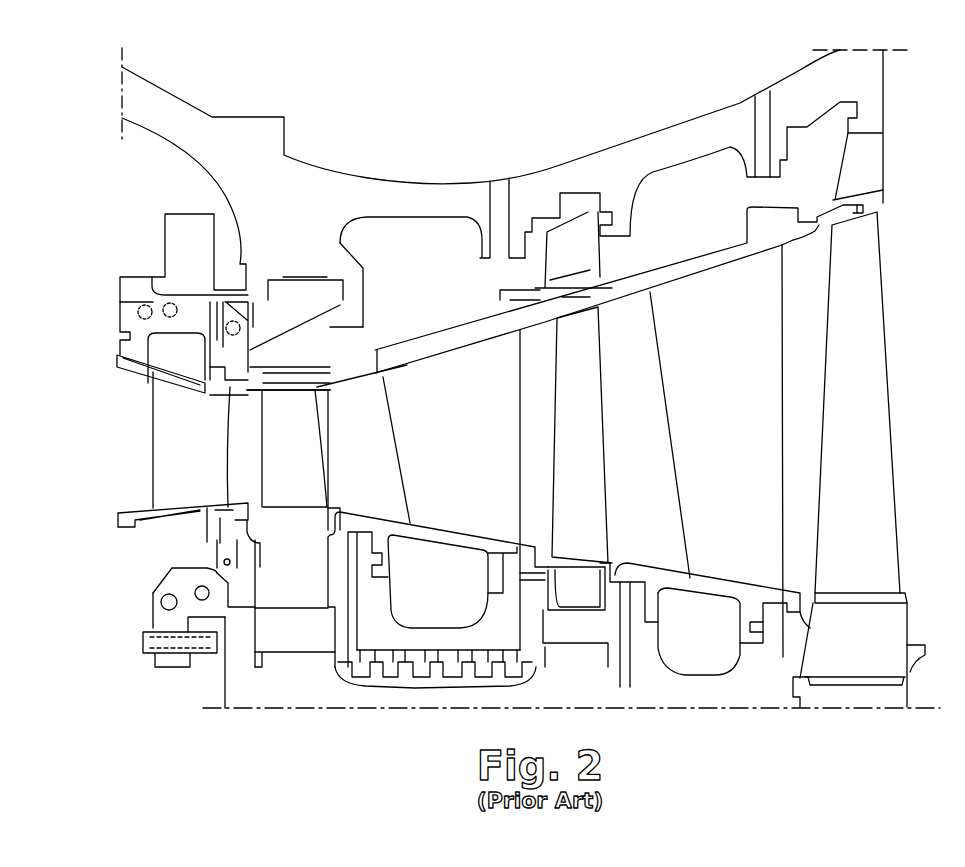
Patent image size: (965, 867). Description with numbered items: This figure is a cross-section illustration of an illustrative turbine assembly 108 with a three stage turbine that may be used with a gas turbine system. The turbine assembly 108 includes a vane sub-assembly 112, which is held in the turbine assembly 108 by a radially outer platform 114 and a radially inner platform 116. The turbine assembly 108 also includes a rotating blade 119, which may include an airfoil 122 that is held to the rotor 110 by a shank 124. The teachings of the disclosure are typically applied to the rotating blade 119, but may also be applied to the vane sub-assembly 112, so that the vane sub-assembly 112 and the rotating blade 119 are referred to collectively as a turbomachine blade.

The turbine assembly 108 is at (432, 171).
The rotor 110 is at (295, 692).
The vane sub-assembly 112 is at (435, 438).
The radially outer platform 114 is at (441, 352).
The radially inner platform 116 is at (497, 540).
The rotating blade 119 is at (258, 453).
The airfoil 122 is at (282, 430).
The shank 124 is at (297, 562).